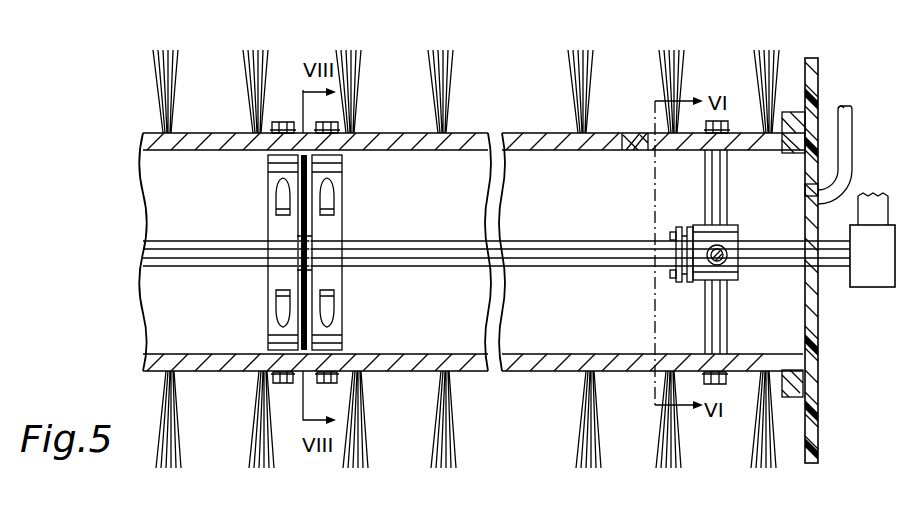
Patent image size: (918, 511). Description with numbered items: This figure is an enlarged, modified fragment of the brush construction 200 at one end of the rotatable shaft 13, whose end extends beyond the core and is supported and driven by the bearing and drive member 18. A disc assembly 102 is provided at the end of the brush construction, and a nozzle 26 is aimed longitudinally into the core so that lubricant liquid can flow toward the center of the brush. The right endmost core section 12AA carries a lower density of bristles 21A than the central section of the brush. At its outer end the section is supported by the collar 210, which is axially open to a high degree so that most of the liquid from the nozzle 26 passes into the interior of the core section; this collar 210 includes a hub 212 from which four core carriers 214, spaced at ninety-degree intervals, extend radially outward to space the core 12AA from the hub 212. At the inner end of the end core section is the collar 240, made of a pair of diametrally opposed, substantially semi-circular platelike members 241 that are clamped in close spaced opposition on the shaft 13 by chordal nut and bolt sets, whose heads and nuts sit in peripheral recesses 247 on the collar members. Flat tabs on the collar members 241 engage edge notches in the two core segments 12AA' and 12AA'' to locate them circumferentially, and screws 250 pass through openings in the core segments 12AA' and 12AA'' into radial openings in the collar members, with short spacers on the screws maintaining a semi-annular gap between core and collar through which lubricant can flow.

The bristles 21A is at (452, 70).
The screws 250 is at (340, 125).
The core segment 12AA' is at (353, 114).
The core segment 12AA'' is at (343, 385).
The right endmost core section 12AA is at (653, 294).
The collar 240 is at (346, 251).
The platelike members 241 is at (345, 228).
The peripheral recesses 247 is at (345, 321).
The rotatable shaft 13 is at (758, 267).
The core carriers 214 is at (696, 330).
The collar 210 is at (669, 306).
The hub 212 is at (664, 279).
The disc assembly 102 is at (803, 72).
The nozzle 26 is at (806, 192).
The brush construction 200 is at (833, 82).
The bearing and drive member 18 is at (870, 287).